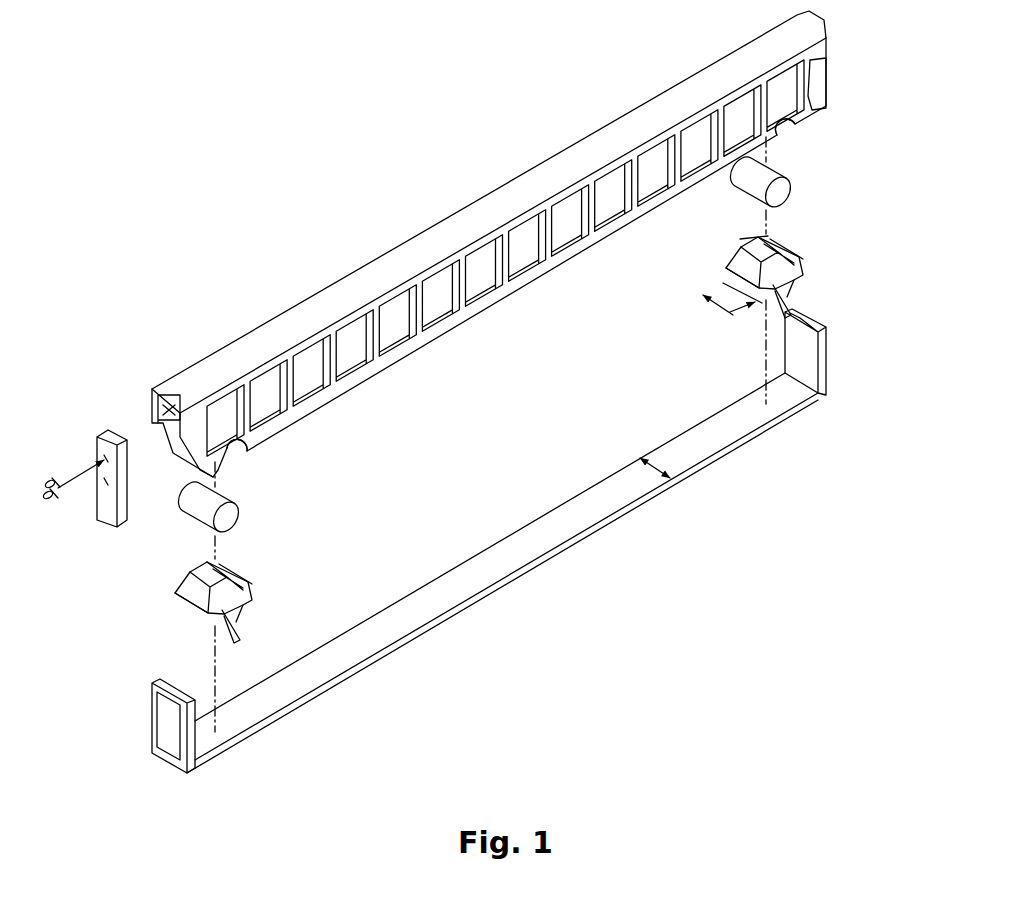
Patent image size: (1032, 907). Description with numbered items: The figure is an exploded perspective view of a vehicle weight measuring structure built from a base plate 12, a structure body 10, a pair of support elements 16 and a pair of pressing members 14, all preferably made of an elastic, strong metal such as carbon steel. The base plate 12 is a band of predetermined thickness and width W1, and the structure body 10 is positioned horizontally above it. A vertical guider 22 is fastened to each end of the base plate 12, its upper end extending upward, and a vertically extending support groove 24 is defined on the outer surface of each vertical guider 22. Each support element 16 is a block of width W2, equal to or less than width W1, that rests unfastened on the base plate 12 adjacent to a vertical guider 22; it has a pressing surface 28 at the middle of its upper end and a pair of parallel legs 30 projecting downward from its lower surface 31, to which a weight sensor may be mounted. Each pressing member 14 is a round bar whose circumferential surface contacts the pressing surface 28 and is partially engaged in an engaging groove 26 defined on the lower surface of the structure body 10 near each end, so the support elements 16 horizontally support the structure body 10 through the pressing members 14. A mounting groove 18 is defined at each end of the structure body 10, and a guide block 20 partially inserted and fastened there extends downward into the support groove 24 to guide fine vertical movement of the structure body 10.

The structure body 10 is at (390, 246).
The base plate 12 is at (553, 565).
The pressing member 14 is at (244, 527).
The support element 16 is at (264, 592).
The mounting groove 18 is at (168, 396).
The guide block 20 is at (104, 436).
The vertical guider 22 is at (154, 680).
The support groove 24 is at (166, 721).
The engaging groove 26 is at (240, 456).
The pressing surface 28 is at (752, 240).
The leg 30 is at (232, 636).
The lower surface 31 is at (246, 621).
The width W1 is at (643, 477).
The width W2 is at (728, 305).